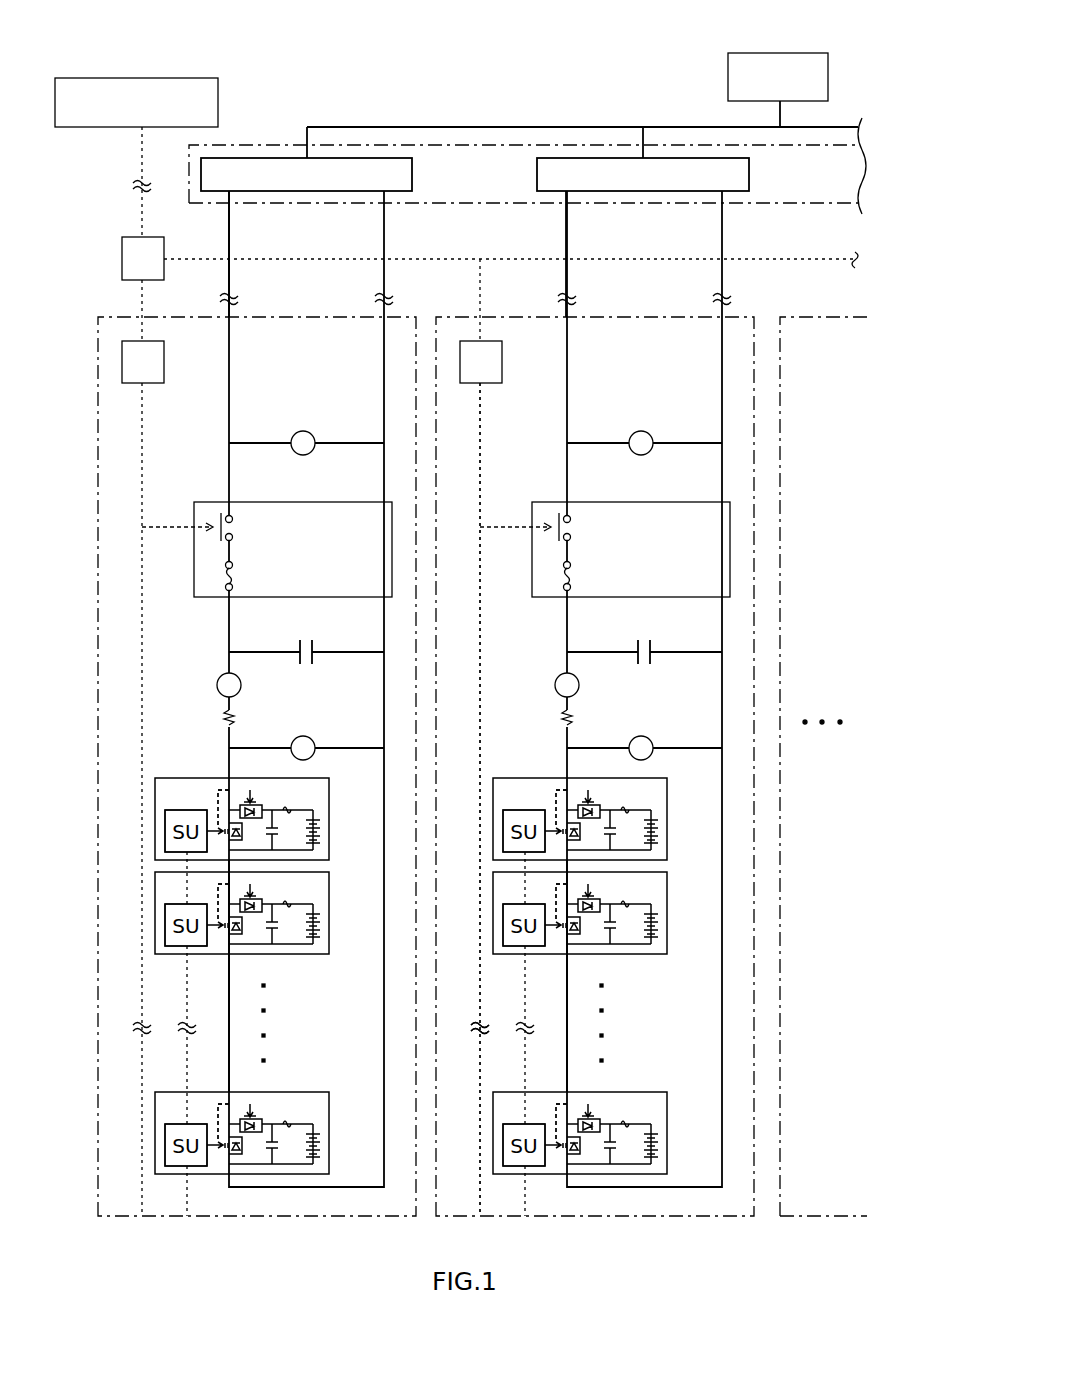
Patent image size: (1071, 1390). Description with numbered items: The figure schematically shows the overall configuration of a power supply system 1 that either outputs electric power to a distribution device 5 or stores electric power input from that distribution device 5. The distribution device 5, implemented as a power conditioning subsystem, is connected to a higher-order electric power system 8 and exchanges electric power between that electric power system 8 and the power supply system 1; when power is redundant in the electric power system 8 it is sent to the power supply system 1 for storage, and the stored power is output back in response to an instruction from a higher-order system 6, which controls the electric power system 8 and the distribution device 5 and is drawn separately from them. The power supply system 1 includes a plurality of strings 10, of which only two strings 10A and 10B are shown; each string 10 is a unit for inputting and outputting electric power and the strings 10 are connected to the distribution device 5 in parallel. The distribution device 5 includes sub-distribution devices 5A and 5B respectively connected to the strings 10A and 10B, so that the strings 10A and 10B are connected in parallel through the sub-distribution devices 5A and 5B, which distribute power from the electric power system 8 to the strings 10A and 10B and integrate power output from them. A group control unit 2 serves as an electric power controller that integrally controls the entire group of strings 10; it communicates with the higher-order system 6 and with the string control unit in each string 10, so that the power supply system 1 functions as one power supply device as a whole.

The power supply system 1 is at (116, 206).
The group control unit (GCU) 2 is at (165, 247).
The distribution device 5 is at (266, 144).
The sub-distribution device 5A is at (412, 176).
The sub-distribution device 5B is at (749, 176).
The higher-order system 6 is at (218, 102).
The higher-order electric power system 8 is at (828, 79).
The string 10 is at (153, 1238).
The string 10A is at (254, 1218).
The string 10B is at (592, 1218).